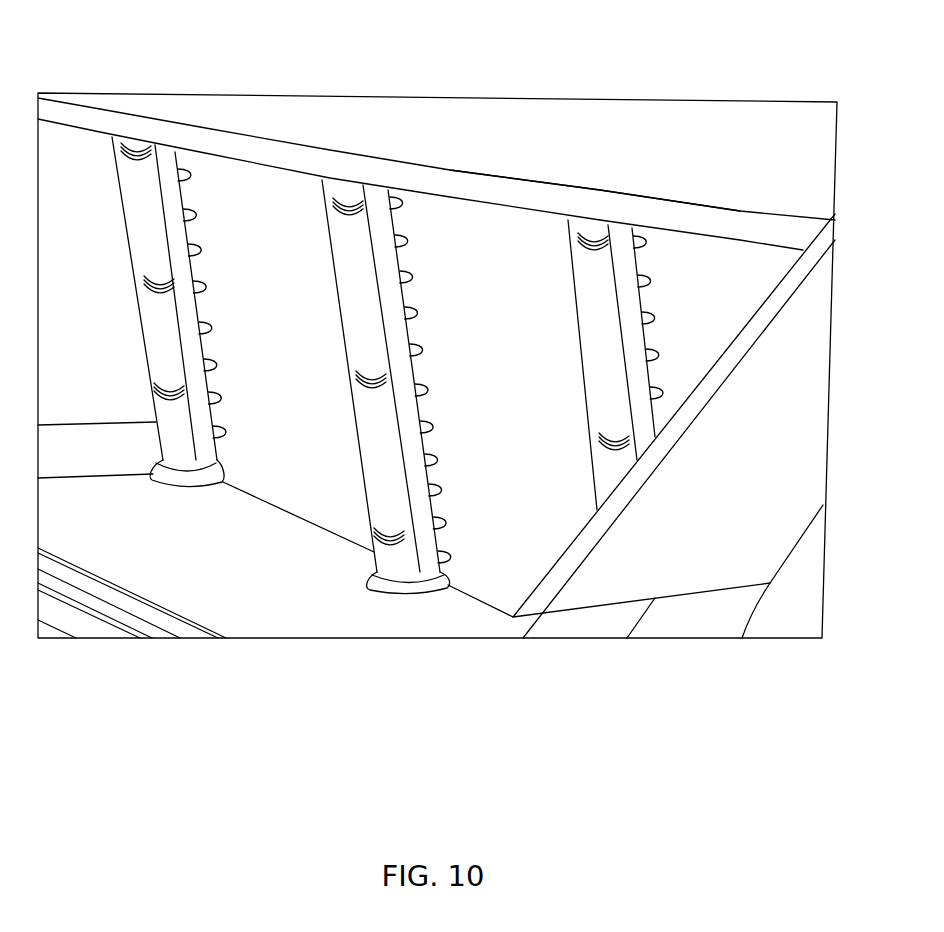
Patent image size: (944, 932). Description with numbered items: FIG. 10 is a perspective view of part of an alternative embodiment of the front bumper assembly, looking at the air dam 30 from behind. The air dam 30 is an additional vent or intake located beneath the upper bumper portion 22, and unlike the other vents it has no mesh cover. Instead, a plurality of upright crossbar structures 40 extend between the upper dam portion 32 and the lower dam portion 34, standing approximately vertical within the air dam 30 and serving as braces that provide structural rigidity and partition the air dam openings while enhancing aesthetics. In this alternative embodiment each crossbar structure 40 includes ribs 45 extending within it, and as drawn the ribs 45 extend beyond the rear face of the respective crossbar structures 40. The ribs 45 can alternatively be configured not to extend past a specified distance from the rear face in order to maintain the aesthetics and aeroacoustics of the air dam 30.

The upper bumper portion 22 is at (558, 99).
The air dam 30 is at (655, 230).
The upper dam portion 32 is at (518, 188).
The lower dam portion 34 is at (467, 603).
The crossbar structure 40 is at (116, 234).
The rib 45 is at (210, 327).